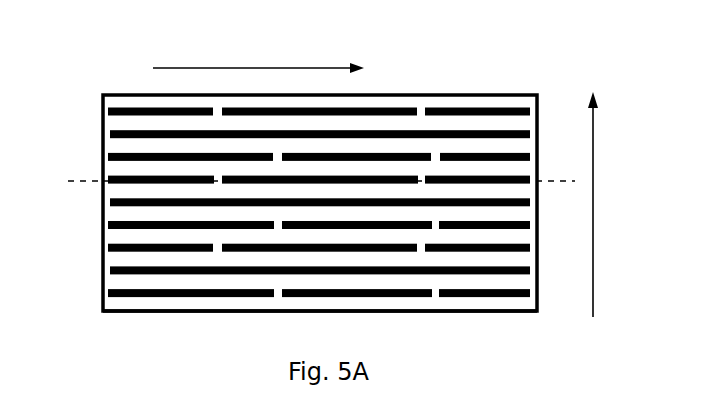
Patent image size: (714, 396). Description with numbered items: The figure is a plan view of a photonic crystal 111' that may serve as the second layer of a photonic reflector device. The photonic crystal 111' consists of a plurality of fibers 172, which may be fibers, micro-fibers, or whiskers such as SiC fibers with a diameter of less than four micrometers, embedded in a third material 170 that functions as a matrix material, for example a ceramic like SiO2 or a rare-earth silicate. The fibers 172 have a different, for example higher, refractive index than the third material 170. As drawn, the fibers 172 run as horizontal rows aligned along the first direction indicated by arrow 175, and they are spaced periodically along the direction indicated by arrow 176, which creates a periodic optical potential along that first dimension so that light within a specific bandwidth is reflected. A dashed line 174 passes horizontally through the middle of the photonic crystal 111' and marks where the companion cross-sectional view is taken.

The photonic crystal 111' is at (320, 157).
The third material 170 is at (114, 303).
The fibers 172 is at (113, 113).
The dashed line 174 is at (68, 179).
The arrow 175 is at (210, 64).
The arrow 176 is at (596, 237).